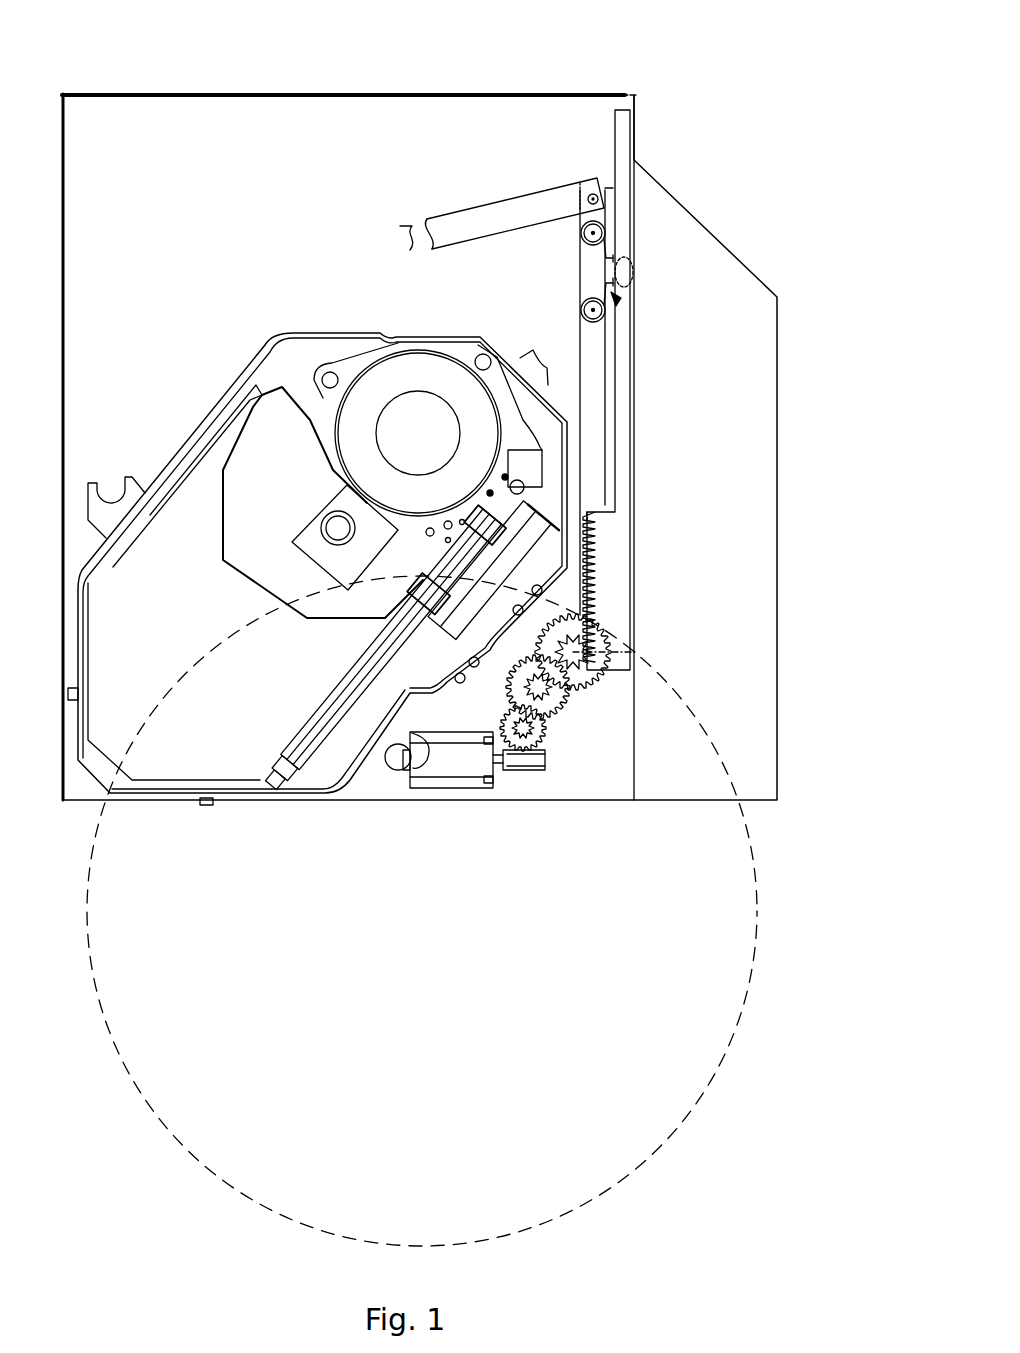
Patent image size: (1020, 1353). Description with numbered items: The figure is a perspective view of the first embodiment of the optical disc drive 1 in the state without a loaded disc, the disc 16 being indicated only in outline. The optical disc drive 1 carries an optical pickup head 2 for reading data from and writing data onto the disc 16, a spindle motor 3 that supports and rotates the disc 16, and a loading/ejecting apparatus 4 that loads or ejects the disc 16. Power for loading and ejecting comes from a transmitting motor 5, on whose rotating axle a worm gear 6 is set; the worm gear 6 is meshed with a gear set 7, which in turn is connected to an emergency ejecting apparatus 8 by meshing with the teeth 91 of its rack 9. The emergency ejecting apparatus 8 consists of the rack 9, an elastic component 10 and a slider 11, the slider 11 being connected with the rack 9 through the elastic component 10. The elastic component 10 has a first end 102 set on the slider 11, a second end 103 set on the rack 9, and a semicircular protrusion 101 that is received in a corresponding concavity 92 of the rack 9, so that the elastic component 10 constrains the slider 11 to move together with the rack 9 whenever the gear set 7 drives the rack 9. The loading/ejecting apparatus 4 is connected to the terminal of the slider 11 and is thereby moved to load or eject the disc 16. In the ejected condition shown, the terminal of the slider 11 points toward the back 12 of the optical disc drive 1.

The optical disc drive 1 is at (707, 179).
The optical pickup head 2 is at (233, 582).
The spindle motor 3 is at (400, 392).
The loading/ejecting apparatus 4 is at (467, 212).
The transmitting motor 5 is at (432, 790).
The worm gear 6 is at (516, 775).
The gear set 7 is at (565, 716).
The emergency ejecting apparatus 8 is at (679, 390).
The rack 9 is at (655, 584).
The elastic component 10 is at (594, 401).
The slider 11 is at (607, 405).
The back 12 is at (527, 93).
The disc 16 is at (730, 762).
The teeth 91 is at (590, 572).
The concavity 92 is at (620, 257).
The protrusion 101 is at (628, 290).
The first end 102 is at (582, 238).
The second end 103 is at (582, 310).